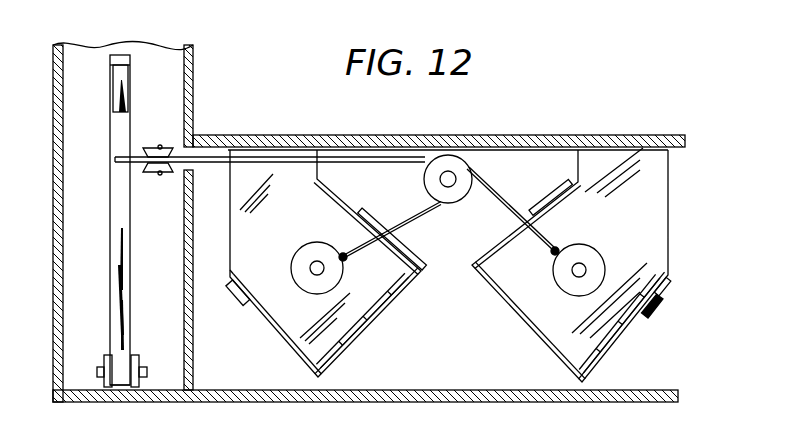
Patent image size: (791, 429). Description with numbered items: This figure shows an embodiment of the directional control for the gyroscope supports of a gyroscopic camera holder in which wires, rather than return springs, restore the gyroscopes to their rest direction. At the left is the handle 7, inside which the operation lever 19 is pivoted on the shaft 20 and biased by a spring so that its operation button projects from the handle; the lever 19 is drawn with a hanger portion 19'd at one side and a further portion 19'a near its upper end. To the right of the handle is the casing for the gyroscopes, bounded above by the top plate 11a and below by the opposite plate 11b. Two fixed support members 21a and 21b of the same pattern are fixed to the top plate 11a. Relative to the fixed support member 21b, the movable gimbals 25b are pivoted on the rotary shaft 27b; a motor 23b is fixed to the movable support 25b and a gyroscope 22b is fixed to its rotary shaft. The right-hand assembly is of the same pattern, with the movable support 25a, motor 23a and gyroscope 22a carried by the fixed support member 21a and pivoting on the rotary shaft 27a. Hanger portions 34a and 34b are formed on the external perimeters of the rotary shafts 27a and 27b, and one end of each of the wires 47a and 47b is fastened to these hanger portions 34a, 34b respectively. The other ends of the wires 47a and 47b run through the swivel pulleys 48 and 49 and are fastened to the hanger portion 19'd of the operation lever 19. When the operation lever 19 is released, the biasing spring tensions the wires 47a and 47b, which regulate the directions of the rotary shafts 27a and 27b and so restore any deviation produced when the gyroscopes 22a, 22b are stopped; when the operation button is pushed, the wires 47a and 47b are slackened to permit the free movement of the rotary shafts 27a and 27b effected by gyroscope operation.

The handle 7 is at (53, 223).
The top plate 11a is at (392, 135).
The bottom wall 11b is at (462, 390).
The operation lever 19 is at (101, 220).
The index mark of slide rod 19'a is at (143, 88).
The hanger portion 19'd is at (245, 174).
The shaft 20 is at (138, 357).
The fixed support member 21a is at (652, 208).
The fixed support member 21b is at (343, 327).
The gyroscope 22a is at (623, 327).
The gyroscope 22b is at (383, 310).
The right adjusting block 23a is at (658, 309).
The motor 23b is at (238, 305).
The right mounting plate 25a is at (665, 280).
The movable gimbals 25b is at (407, 275).
The rotary shaft 27a is at (600, 261).
The rotary shaft 27b is at (300, 258).
The hanger portion 34a is at (556, 250).
The spring hanger portion 34b is at (340, 253).
The wire 47a is at (505, 202).
The wire 47b is at (433, 213).
The swivel pulley 48 is at (452, 157).
The swivel pulley 49 is at (155, 148).